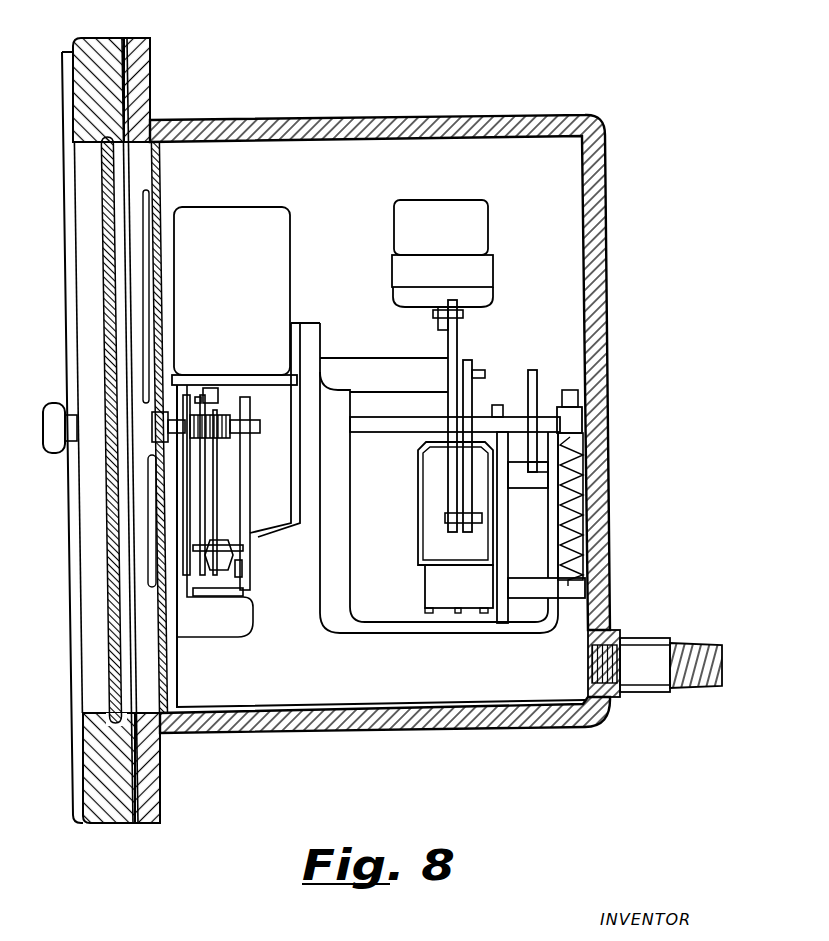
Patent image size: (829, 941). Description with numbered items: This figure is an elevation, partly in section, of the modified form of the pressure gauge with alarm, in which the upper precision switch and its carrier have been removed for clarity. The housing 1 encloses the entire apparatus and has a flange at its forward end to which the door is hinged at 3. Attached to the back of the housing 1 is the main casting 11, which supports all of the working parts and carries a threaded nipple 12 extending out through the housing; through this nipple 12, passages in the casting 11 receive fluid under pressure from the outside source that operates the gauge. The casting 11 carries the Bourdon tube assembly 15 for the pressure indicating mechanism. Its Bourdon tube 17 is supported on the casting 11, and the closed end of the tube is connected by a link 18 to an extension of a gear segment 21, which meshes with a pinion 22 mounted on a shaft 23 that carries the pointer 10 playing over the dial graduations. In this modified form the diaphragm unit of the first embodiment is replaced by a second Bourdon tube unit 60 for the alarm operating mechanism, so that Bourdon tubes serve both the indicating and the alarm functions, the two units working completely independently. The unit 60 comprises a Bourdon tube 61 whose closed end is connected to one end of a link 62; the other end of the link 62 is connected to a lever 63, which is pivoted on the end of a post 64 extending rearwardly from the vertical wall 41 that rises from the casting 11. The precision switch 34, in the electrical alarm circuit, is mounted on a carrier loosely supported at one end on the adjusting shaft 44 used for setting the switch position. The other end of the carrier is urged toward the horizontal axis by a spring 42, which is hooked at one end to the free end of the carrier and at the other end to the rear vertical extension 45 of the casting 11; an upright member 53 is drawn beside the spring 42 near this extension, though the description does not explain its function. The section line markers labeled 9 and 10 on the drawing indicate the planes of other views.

The housing 1 is at (590, 196).
The hinge 3 is at (165, 10).
The section line 9- 9 is at (412, 18).
The pointer 10 is at (468, 50).
The main casting 11 is at (386, 686).
The threaded nipple 12 is at (708, 678).
The Bourdon tube assembly 15 is at (232, 215).
The Bourdon tube 17 is at (243, 293).
The link 18 is at (200, 505).
The gear segment 21 is at (218, 508).
The pinion 22 is at (222, 418).
The shaft 23 is at (258, 430).
The precision switch 34 is at (472, 605).
The vertical wall 41 is at (303, 323).
The spring 42 is at (578, 492).
The shaft 44 is at (380, 423).
The rear upward extension 45 is at (580, 623).
The guide rod 53 is at (535, 378).
The Bourdon tube unit 60 is at (487, 277).
The Bourdon tube 61 is at (453, 249).
The link 62 is at (457, 490).
The lever 63 is at (468, 410).
The post 64 is at (390, 365).